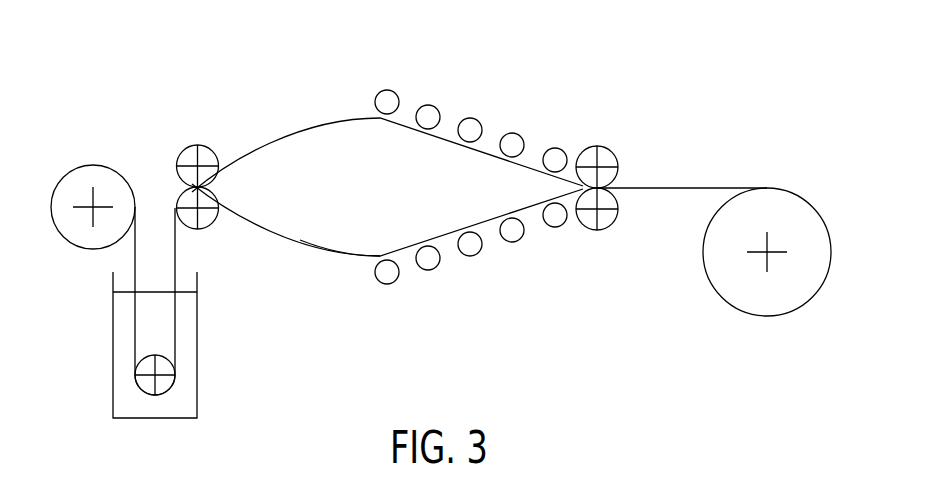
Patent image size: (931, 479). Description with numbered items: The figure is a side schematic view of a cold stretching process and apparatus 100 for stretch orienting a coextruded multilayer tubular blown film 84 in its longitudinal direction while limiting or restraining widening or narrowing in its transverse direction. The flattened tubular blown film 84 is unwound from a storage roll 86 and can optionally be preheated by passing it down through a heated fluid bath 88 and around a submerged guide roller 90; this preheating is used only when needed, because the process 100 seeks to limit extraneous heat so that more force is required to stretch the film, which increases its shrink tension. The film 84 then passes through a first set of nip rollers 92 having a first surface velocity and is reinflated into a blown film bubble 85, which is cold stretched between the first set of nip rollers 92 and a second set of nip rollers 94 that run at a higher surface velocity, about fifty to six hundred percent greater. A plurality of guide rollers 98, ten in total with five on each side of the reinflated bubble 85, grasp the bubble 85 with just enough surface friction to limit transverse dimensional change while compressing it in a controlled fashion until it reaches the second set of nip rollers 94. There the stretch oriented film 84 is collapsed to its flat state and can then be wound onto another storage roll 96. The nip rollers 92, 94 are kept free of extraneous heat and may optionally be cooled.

The tubular blown film 84 is at (135, 256).
The reinflated blown film bubble 85 is at (306, 250).
The storage roll 86 is at (93, 207).
The heated fluid bath 88 is at (188, 338).
The submerged guide roller 90 is at (148, 383).
The first set of nip rollers 92 is at (212, 150).
The second set of nip rollers 94 is at (615, 153).
The storage roll 96 is at (767, 251).
The guide rollers 98 is at (470, 118).
The cold stretching process and apparatus 100 is at (563, 103).